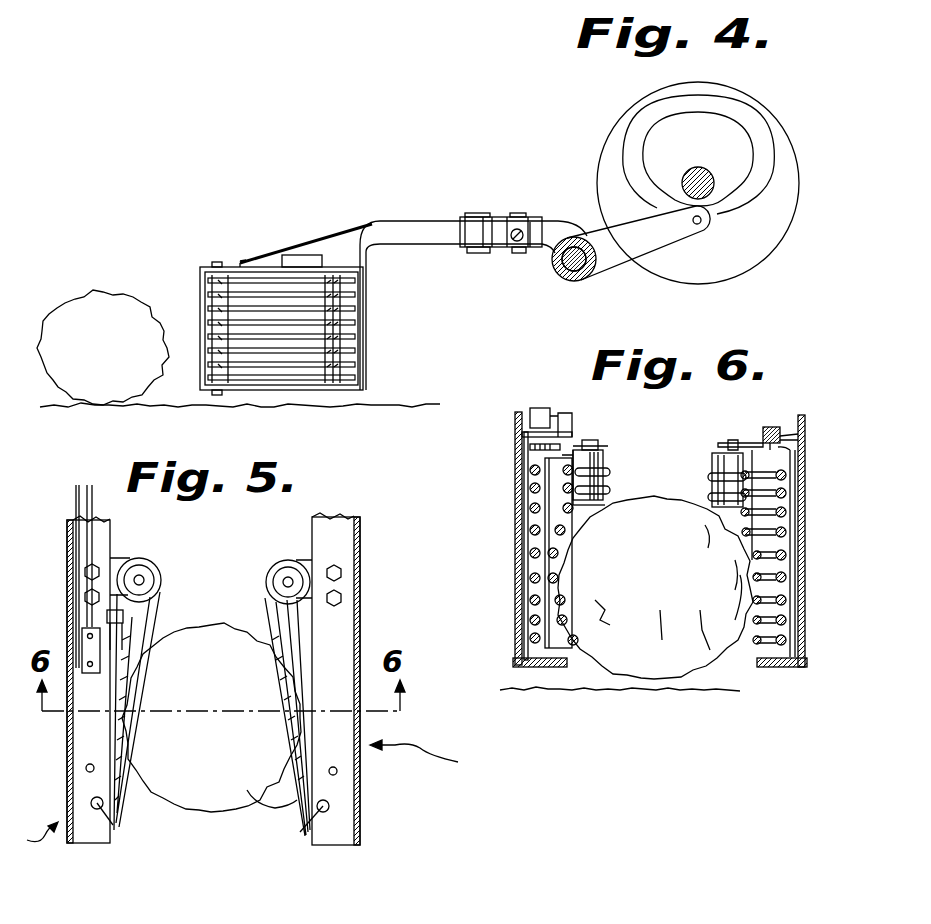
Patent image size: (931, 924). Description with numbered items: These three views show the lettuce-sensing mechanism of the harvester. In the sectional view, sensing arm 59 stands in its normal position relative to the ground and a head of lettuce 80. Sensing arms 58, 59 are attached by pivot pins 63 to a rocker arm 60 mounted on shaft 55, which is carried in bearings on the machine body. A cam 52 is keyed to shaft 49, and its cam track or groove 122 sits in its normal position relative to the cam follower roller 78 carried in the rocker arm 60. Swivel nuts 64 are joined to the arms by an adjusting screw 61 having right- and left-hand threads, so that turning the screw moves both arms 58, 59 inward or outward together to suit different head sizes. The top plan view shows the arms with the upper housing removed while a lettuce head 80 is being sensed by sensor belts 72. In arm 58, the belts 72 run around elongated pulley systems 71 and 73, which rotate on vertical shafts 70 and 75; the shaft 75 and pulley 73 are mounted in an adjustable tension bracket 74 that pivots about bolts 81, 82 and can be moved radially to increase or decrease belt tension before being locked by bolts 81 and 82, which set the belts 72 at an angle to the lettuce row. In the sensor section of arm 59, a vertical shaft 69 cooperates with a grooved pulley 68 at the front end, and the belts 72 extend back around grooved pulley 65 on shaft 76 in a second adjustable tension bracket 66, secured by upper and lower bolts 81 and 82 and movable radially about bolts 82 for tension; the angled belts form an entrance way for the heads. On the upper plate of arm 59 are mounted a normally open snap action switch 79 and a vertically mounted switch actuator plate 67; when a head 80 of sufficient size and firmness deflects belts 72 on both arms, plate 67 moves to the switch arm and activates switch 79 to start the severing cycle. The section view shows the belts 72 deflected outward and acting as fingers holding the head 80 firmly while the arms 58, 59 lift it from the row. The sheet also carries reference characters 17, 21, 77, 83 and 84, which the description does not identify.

In FIG. 5, the frame assembly arrow 17 is at (493, 781).
In FIG. 5, the direction arrow 21 is at (78, 868).
In FIG. 4, the shaft 49 is at (694, 167).
In FIG. 4, the cam 52 is at (612, 132).
In FIG. 4, the shaft 55 is at (560, 277).
In FIG. 5, the sensing arm 58 is at (343, 847).
In FIG. 4, the sensing arm 59 is at (402, 222).
In FIG. 5, the sensing arm 59 is at (95, 843).
In FIG. 4, the rocker arm 60 is at (615, 270).
In FIG. 4, the adjusting screw 61 is at (513, 241).
In FIG. 4, the pivot pins 63 is at (476, 213).
In FIG. 4, the swivel nuts 64 is at (516, 213).
In FIG. 4, the grooved pulley 65 is at (340, 320).
In FIG. 5, the grooved pulley 65 is at (161, 578).
In FIG. 6, the grooved pulley 65 is at (566, 464).
In FIG. 4, the adjustable tension bracket 66 is at (352, 278).
In FIG. 5, the adjustable tension bracket 66 is at (103, 596).
In FIG. 6, the adjustable tension bracket 66 is at (602, 446).
In FIG. 4, the switch actuator plate 67 is at (318, 262).
In FIG. 5, the switch actuator plate 67 is at (123, 648).
In FIG. 6, the switch actuator plate 67 is at (556, 497).
In FIG. 4, the grooved pulley 68 is at (215, 295).
In FIG. 5, the grooved pulley 68 is at (112, 806).
In FIG. 4, the vertical shaft 69 is at (216, 262).
In FIG. 5, the vertical shaft 69 is at (99, 808).
In FIG. 5, the vertical shaft 70 is at (321, 810).
In FIG. 5, the elongated pulley system 71 is at (262, 785).
In FIG. 4, the sensor belts 72 is at (300, 372).
In FIG. 5, the sensor belts 72 is at (157, 628).
In FIG. 6, the sensor belts 72 is at (612, 492).
In FIG. 5, the pulley system 73 is at (292, 602).
In FIG. 6, the pulley system 73 is at (752, 458).
In FIG. 5, the adjustable tension bracket 74 is at (302, 563).
In FIG. 6, the adjustable tension bracket 74 is at (746, 446).
In FIG. 5, the vertical shaft 75 is at (285, 578).
In FIG. 6, the vertical shaft 75 is at (727, 445).
In FIG. 5, the shaft 76 is at (153, 565).
In FIG. 6, the shaft 76 is at (589, 440).
In FIG. 4, the pin 77 is at (533, 232).
In FIG. 4, the cam follower roller 78 is at (703, 222).
In FIG. 4, the snap action switch 79 is at (290, 255).
In FIG. 5, the snap action switch 79 is at (87, 674).
In FIG. 6, the snap action switch 79 is at (535, 408).
In FIG. 4, the lettuce head 80 is at (102, 290).
In FIG. 5, the lettuce head 80 is at (242, 806).
In FIG. 6, the lettuce head 80 is at (688, 490).
In FIG. 5, the bolt 81 is at (97, 568).
In FIG. 5, the bolt 82 is at (121, 558).
In FIG. 6, the mounting plate 83 is at (535, 436).
In FIG. 6, the base plate 84 is at (520, 667).
In FIG. 4, the cam track or groove 122 is at (766, 130).